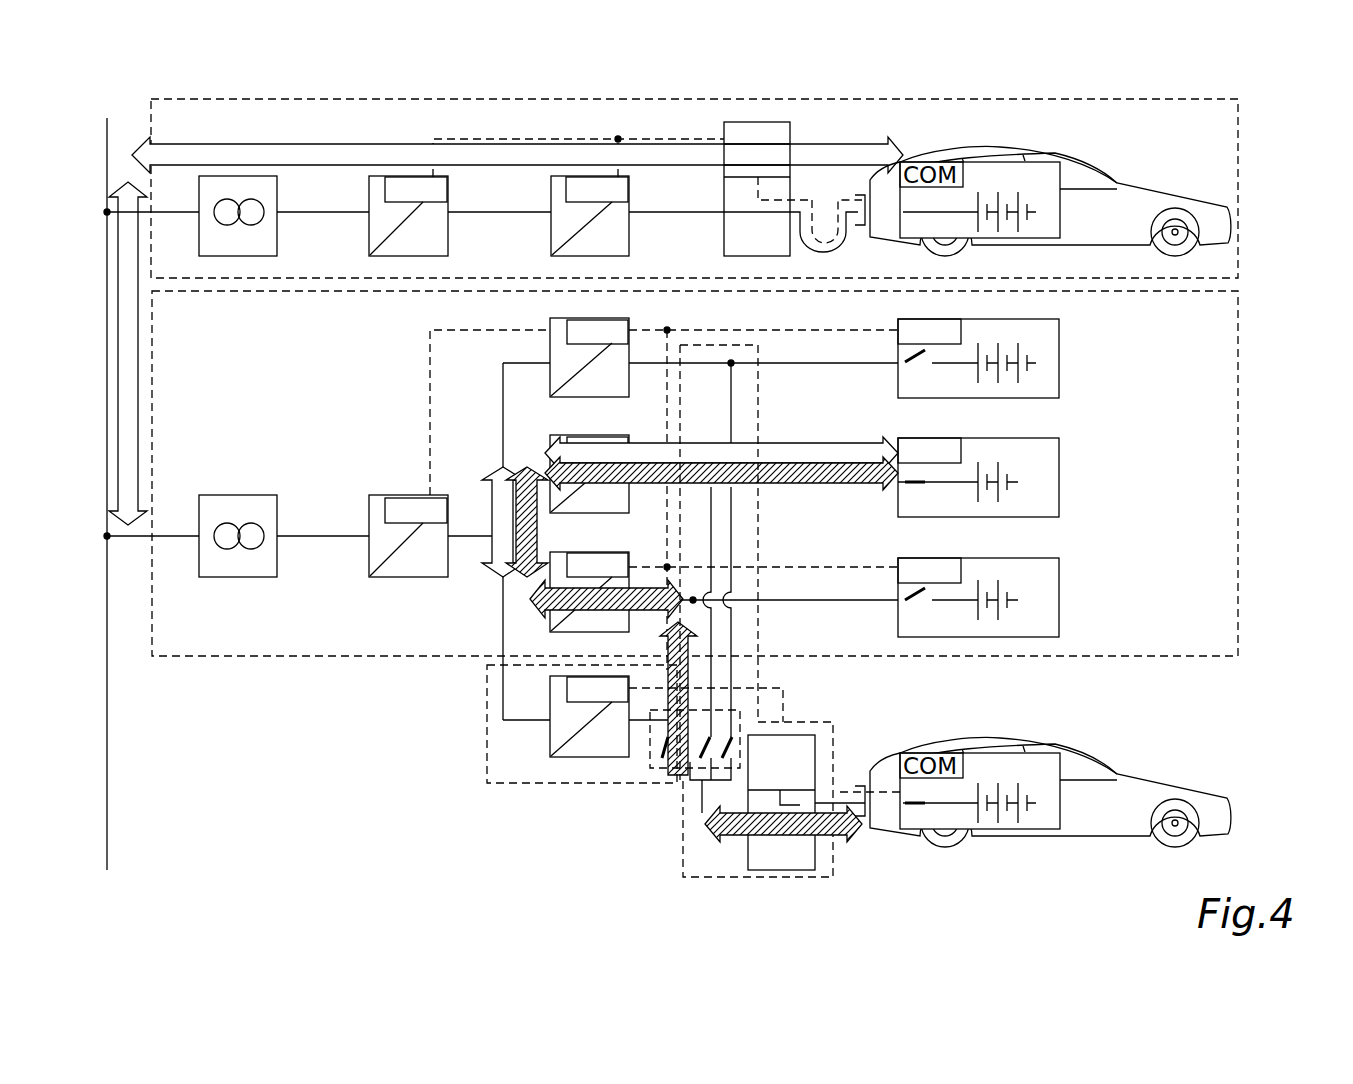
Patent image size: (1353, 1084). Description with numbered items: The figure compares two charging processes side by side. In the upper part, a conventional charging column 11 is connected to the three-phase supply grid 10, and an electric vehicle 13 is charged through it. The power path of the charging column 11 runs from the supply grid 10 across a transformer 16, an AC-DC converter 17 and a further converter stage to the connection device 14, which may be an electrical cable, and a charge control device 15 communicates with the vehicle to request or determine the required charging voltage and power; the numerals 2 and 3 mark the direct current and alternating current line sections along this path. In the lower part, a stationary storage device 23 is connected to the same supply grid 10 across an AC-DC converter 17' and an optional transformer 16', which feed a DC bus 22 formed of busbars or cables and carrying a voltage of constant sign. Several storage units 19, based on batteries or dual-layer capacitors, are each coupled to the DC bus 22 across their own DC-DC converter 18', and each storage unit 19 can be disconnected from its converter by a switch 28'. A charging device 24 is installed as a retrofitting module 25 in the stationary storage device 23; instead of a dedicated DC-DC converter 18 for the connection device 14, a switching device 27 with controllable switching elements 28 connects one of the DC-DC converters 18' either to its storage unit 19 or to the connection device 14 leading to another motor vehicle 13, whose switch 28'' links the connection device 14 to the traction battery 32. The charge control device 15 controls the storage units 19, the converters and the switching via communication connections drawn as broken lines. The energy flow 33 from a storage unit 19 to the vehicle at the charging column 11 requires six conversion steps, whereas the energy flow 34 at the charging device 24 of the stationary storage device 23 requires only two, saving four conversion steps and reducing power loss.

The supply grid 10 is at (107, 127).
The charging station 11 is at (1238, 130).
The electric vehicle 13 is at (985, 142).
The connection device 14 is at (845, 250).
The charge control device 15 is at (790, 128).
The transformer 16 is at (239, 181).
The AC-DC converter 17 is at (546, 181).
The DC line 2 is at (488, 220).
The AC line 3 is at (332, 202).
The transformer 16' is at (239, 507).
The AC-DC converter 17' is at (459, 453).
The DC-DC converter 18' is at (675, 514).
The DC-DC converter 18 is at (604, 724).
The storage unit 19 is at (1059, 350).
The DC bus 22 is at (495, 592).
The stationary storage device 23 is at (1238, 553).
The charging device 24 is at (796, 611).
The retrofitting module 25 is at (757, 670).
The switching device 27 is at (648, 768).
The switching element 28 is at (651, 775).
The switch 28' is at (901, 502).
The switch 28'' is at (951, 851).
The traction battery 32 is at (1003, 780).
The energy flow 33 is at (818, 443).
The energy flow 34 is at (818, 483).